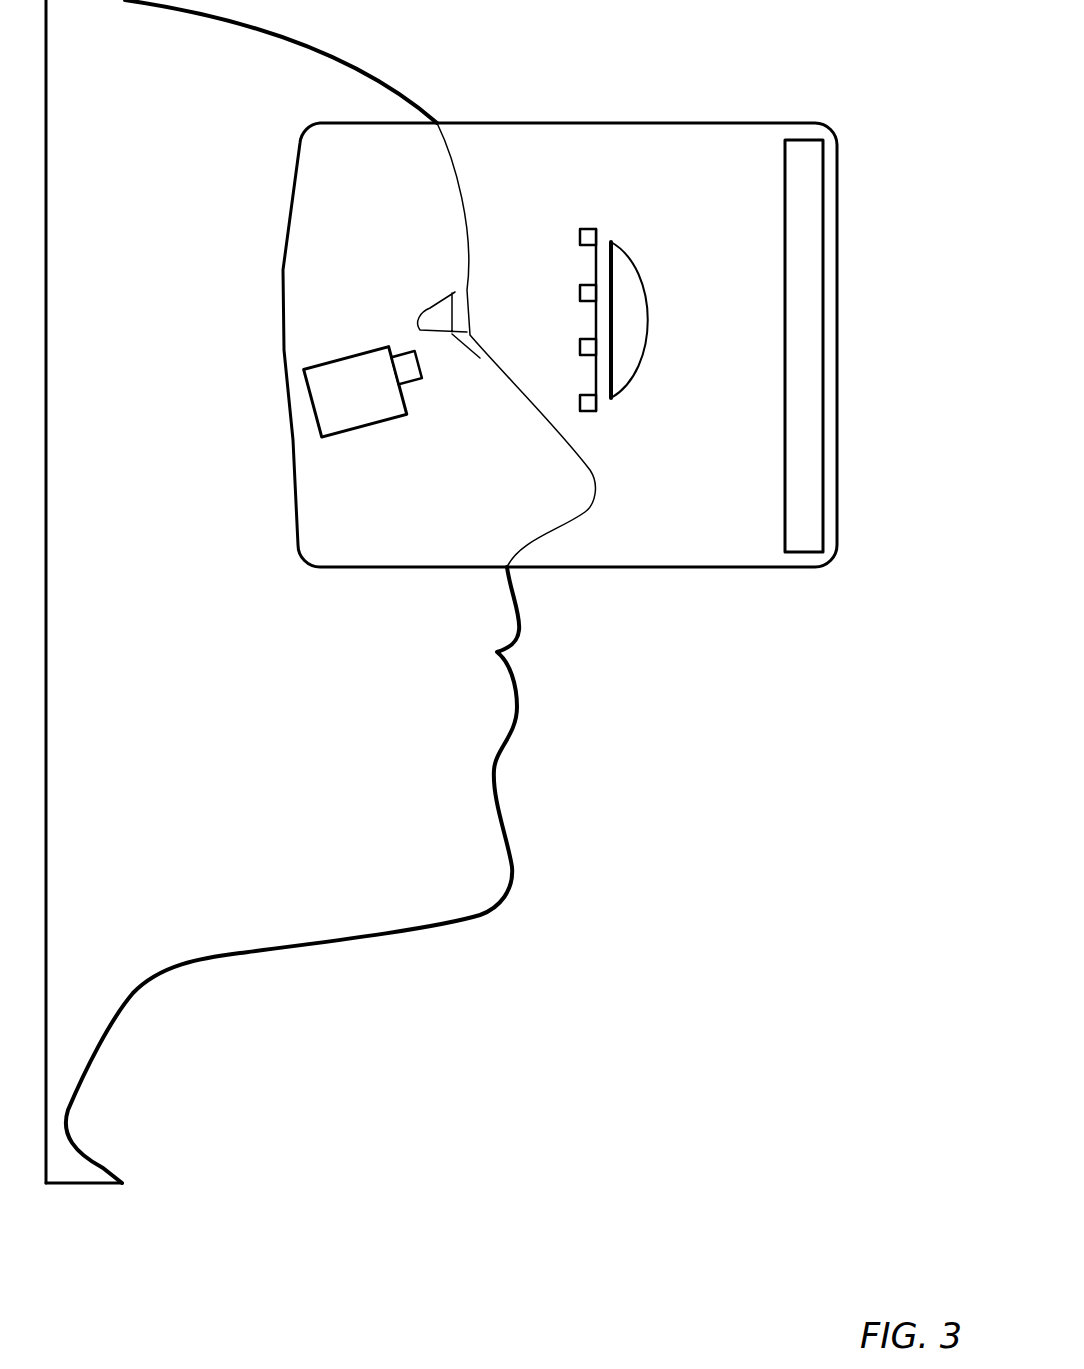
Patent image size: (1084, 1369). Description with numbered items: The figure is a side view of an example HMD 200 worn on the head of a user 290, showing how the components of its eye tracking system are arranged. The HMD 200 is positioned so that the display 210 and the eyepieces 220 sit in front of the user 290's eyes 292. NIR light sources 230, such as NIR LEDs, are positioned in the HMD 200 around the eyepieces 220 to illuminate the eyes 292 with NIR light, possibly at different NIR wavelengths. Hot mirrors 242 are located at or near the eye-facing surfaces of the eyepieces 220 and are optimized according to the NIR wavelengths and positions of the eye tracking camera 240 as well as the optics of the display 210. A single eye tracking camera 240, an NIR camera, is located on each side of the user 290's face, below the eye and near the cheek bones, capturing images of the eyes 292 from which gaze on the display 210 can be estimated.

The user 290 is at (103, 34).
The HMD 200 is at (368, 158).
The display 210 is at (803, 303).
The eyepieces 220 is at (641, 272).
The NIR light source 230 is at (580, 238).
The eye tracking camera 240 is at (335, 408).
The hot mirrors 242 is at (612, 398).
The eyes 292 is at (437, 317).